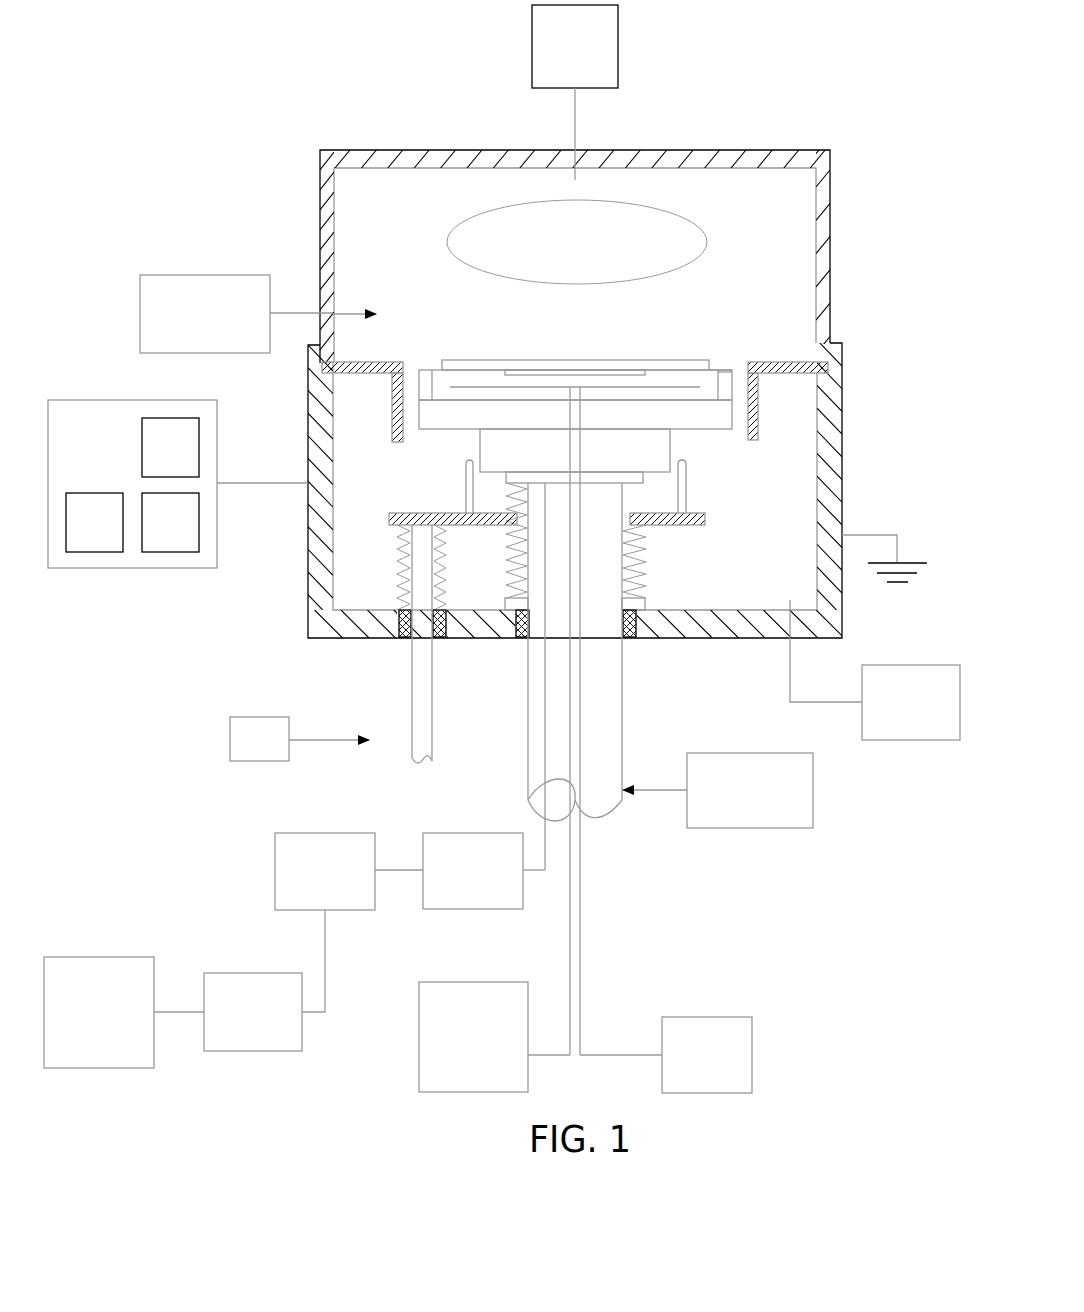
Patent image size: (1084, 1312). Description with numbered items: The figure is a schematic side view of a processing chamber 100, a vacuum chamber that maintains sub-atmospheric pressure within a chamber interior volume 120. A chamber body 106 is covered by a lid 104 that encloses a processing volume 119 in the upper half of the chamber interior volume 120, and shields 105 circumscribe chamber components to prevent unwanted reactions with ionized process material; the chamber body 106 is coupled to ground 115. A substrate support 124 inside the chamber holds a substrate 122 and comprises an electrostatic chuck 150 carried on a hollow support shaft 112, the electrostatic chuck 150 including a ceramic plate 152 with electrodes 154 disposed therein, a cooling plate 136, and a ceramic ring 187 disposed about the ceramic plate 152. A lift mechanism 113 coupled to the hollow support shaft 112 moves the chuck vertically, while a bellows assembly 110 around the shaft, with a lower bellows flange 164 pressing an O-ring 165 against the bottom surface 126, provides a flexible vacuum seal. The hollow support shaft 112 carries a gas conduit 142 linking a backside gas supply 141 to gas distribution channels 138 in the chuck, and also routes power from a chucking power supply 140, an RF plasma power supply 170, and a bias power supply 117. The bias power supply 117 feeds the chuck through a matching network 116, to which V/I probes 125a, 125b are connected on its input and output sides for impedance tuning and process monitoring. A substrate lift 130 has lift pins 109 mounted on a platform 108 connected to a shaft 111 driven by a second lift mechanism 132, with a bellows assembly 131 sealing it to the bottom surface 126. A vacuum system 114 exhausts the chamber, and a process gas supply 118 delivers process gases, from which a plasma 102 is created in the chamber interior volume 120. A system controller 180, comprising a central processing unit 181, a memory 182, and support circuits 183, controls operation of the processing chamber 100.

The processing chamber 100 is at (274, 92).
The plasma 102 is at (577, 242).
The lid 104 is at (856, 151).
The shield 105 is at (366, 374).
The chamber body 106 is at (864, 347).
The platform 108 is at (708, 520).
The lift pins 109 is at (690, 488).
The bellows assembly 110 is at (640, 548).
The shaft 111 is at (434, 703).
The hollow support shaft 112 is at (624, 703).
The lift mechanism 113 is at (815, 772).
The vacuum system 114 is at (911, 662).
The ground 115 is at (868, 530).
The matching network 116 is at (327, 830).
The bias power supply 117 is at (97, 954).
The process gas supply 118 is at (177, 273).
The processing volume 119 is at (760, 237).
The chamber interior volume 120 is at (366, 320).
The substrate 122 is at (519, 359).
The substrate support 124 is at (697, 430).
The V/I probe 125a is at (252, 971).
The V/I probe 125b is at (473, 831).
The bottom surface 126 is at (750, 608).
The substrate lift 130 is at (376, 580).
The bellows assembly 131 is at (447, 547).
The second lift mechanism 132 is at (258, 714).
The cooling plate 136 is at (476, 432).
The gas distribution channels 138 is at (580, 384).
The chucking power supply 140 is at (473, 980).
The backside gas supply 141 is at (752, 1037).
The gas conduit 142 is at (582, 909).
The electrostatic chuck 150 is at (431, 360).
The ceramic plate 152 is at (715, 368).
The electrodes 154 is at (667, 388).
The lower bellows flange 164 is at (648, 603).
The O-ring 165 is at (505, 604).
The RF plasma power supply 170 is at (575, 92).
The system controller 180 is at (178, 484).
The central processing unit 181 is at (170, 447).
The memory 182 is at (94, 522).
The support circuits 183 is at (170, 522).
The ceramic ring 187 is at (726, 368).